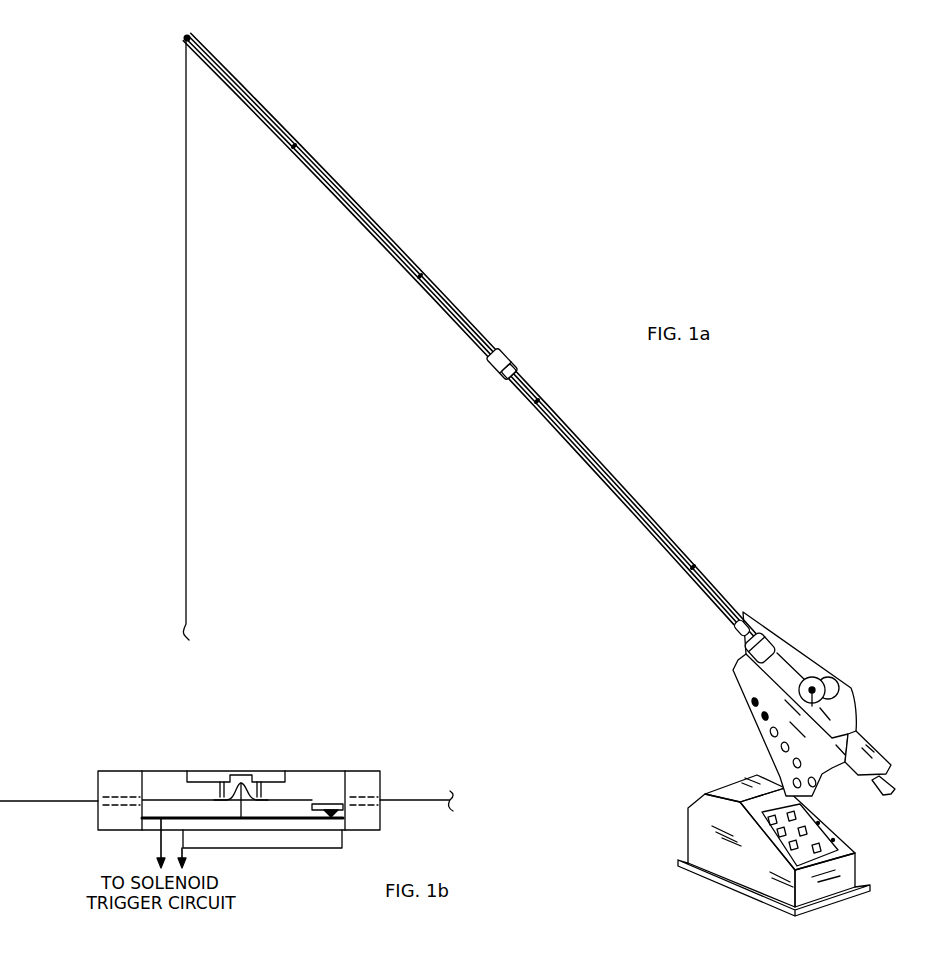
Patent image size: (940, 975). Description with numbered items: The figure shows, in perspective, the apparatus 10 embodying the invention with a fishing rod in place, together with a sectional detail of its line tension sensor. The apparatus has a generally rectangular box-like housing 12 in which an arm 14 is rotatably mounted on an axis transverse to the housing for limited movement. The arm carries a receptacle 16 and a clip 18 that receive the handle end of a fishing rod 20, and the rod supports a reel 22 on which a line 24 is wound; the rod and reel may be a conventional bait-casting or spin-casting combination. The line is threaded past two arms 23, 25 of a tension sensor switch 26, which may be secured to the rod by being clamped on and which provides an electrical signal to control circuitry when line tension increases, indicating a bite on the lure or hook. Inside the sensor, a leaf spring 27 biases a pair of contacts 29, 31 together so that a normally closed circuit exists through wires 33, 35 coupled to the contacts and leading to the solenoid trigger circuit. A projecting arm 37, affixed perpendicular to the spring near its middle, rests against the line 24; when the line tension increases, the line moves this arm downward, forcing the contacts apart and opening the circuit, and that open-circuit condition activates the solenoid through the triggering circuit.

In FIG. 1a, the apparatus 10 is at (751, 764).
In FIG. 1a, the housing 12 is at (688, 829).
In FIG. 1a, the arm 14 is at (770, 741).
In FIG. 1a, the receptacle 16 is at (875, 750).
In FIG. 1a, the clip 18 is at (732, 637).
In FIG. 1a, the fishing rod 20 is at (548, 437).
In FIG. 1a, the reel 22 is at (850, 686).
In FIG. 1a, the line 24 is at (598, 454).
In FIG. 1b, the line 24 is at (420, 798).
In FIG. 1a, the tension sensor switch 26 is at (513, 356).
In FIG. 1b, the tension sensor switch 26 is at (313, 762).
In FIG. 1b, the leaf spring 27 is at (185, 816).
In FIG. 1b, the arm 25 is at (218, 796).
In FIG. 1b, the arm 23 is at (267, 790).
In FIG. 1b, the projecting arm 37 is at (238, 786).
In FIG. 1b, the contact 31 is at (320, 818).
In FIG. 1b, the contact 29 is at (346, 812).
In FIG. 1b, the wire 35 is at (232, 848).
In FIG. 1b, the wire 33 is at (150, 847).